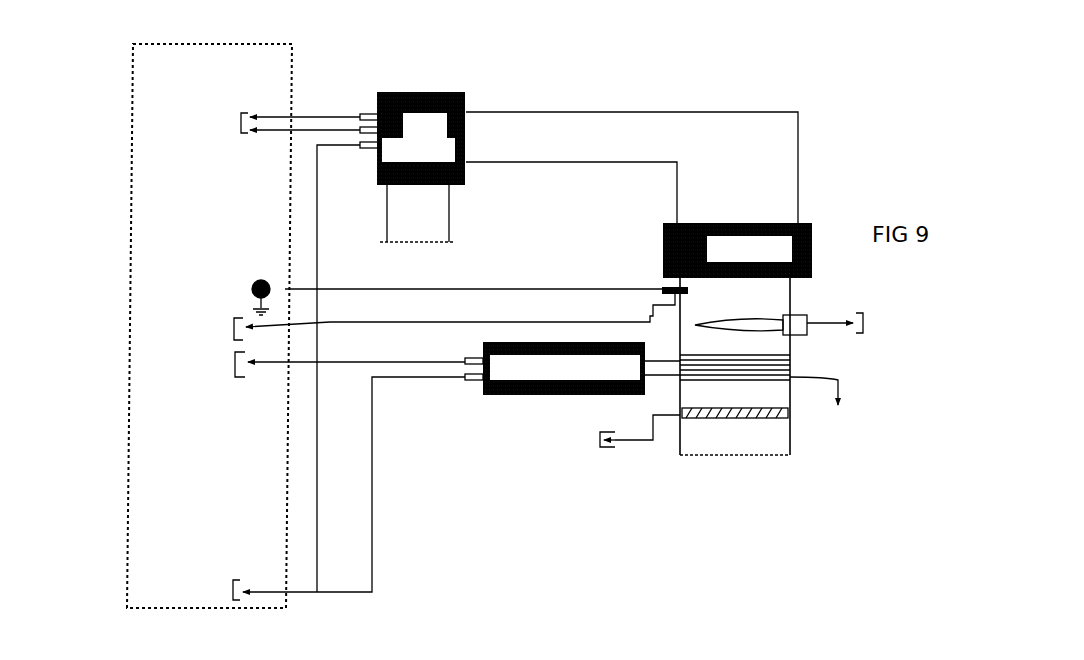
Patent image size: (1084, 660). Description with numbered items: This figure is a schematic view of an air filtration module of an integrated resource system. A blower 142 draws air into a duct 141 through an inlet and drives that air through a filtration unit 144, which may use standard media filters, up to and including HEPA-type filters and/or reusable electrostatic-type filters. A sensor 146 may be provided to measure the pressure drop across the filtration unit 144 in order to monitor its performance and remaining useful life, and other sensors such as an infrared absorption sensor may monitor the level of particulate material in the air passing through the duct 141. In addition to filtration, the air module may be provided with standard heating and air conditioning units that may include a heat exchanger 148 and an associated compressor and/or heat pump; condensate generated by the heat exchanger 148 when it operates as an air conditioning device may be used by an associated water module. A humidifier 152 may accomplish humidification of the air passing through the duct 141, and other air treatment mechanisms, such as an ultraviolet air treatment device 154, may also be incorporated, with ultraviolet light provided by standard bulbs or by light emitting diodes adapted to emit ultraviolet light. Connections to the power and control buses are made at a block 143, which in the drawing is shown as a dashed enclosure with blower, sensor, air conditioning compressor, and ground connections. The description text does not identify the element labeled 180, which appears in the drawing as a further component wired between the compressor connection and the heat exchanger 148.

The duct 141 is at (452, 212).
The blower 142 is at (467, 98).
The block 143 is at (130, 85).
The filtration unit 144 is at (807, 222).
The sensor 146 is at (657, 287).
The heat exchanger 148 is at (800, 365).
The humidifier 152 is at (735, 420).
The ultraviolet air treatment device 154 is at (800, 315).
The fuse relay 180 is at (505, 395).